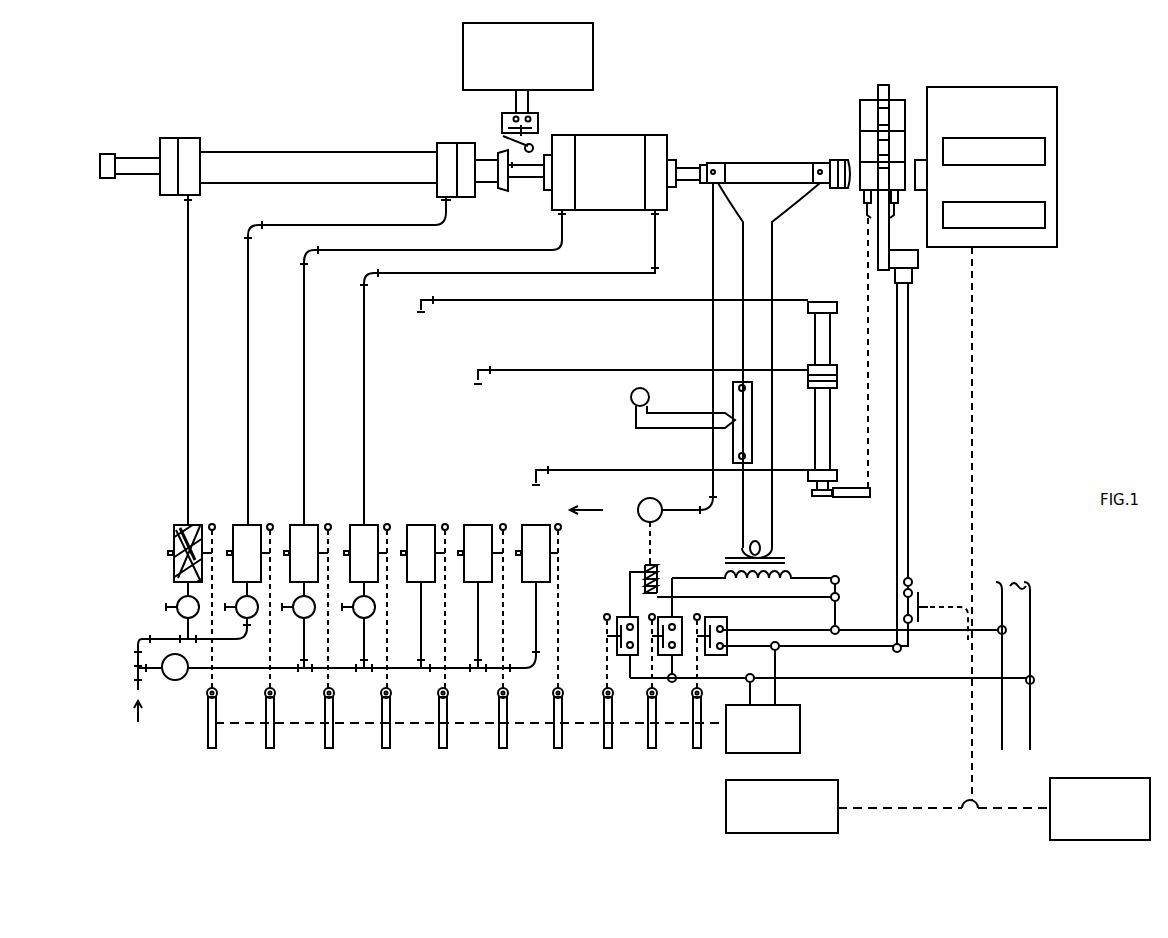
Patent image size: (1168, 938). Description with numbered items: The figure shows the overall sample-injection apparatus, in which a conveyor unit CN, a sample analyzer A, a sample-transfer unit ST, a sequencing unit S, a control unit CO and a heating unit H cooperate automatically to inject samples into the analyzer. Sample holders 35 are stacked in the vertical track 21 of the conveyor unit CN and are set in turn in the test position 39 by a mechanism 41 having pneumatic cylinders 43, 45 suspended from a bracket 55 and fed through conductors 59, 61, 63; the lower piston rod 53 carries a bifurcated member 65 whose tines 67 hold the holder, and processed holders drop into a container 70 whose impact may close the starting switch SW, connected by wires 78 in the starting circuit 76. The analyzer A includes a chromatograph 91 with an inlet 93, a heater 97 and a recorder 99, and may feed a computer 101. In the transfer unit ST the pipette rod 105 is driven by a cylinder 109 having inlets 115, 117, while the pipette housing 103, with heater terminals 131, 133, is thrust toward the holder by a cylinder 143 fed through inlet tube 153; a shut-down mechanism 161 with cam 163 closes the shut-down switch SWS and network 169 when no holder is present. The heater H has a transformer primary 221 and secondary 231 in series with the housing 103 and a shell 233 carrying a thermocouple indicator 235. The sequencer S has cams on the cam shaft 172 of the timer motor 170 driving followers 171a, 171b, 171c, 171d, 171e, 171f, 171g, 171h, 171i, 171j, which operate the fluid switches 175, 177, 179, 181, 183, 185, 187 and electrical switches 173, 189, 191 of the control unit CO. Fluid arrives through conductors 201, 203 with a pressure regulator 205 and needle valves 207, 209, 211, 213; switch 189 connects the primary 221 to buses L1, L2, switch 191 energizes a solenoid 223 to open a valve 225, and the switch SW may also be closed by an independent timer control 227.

The piston rod 105 is at (146, 155).
The cylinder 109 is at (344, 156).
The fluid inlet 115 is at (192, 198).
The fluid inlet 117 is at (446, 198).
The shut-down mechanism 161 is at (467, 160).
The cam 163 is at (503, 190).
The shut-down network 169 is at (593, 60).
The shut-down switch SWS is at (538, 125).
The cylinder 143 is at (625, 172).
The sample-transfer unit ST is at (522, 223).
The inlet tube 153 is at (564, 212).
The bracket 55 is at (656, 212).
The terminal 131 is at (713, 163).
The pipette holder or housing 103 is at (769, 163).
The terminal 133 is at (820, 163).
The sample holder 35 is at (868, 100).
The vertical track 21 is at (882, 164).
The conveyor unit CN is at (843, 111).
The test position 39 is at (860, 180).
The inlet 93 is at (918, 163).
The container 70 is at (912, 260).
The wires 78 is at (908, 352).
The chromatograph 91 is at (1052, 120).
The sample analyzer A is at (987, 73).
The heater 97 is at (990, 166).
The recorder 99 is at (1005, 203).
The conductor 63 is at (790, 303).
The pneumatic cylinder 43 is at (825, 340).
The conductor 59 is at (810, 390).
The mechanism 41 is at (851, 390).
The pneumatic cylinder 45 is at (828, 434).
The conductor 61 is at (784, 470).
The piston rod 53 is at (812, 492).
The tines 67 is at (845, 492).
The bifurcated member 65 is at (853, 516).
The thermocouple temperature indicator 235 is at (631, 400).
The shell 233 is at (735, 438).
The secondary 231 is at (748, 552).
The heating unit H is at (758, 549).
The primary 221 is at (792, 578).
The control unit CO is at (455, 570).
The fluid switch 175 is at (176, 526).
The adjustable needle valve 207 is at (178, 600).
The fluid switch 177 is at (238, 526).
The adjustable needle valve 209 is at (256, 630).
The fluid switch 179 is at (296, 526).
The adjustable needle valve 211 is at (302, 620).
The fluid switch 181 is at (358, 526).
The adjustable needle valve 213 is at (362, 620).
The fluid switch 187 is at (416, 526).
The fluid switch 183 is at (474, 526).
The fluid switch 185 is at (532, 526).
The conductor 203 is at (140, 639).
The pressure regulator 205 is at (163, 676).
The conductor 201 is at (258, 672).
The sequencing unit S is at (157, 720).
The cam shaft 172 is at (476, 730).
The follower 171a is at (693, 692).
The follower 171b is at (208, 692).
The follower 171c is at (266, 692).
The follower 171d is at (325, 692).
The follower 171e is at (382, 692).
The follower 171f is at (499, 692).
The follower 171g is at (554, 692).
The follower 171h is at (439, 692).
The follower 171i is at (648, 692).
The follower 171j is at (604, 692).
The valve 225 is at (650, 502).
The solenoid 223 is at (719, 582).
The electrical switch 191 is at (618, 617).
The electrical switch 189 is at (663, 617).
The electrical switch 173 is at (724, 617).
The starting circuit 76 is at (832, 640).
The starting switch SW is at (943, 611).
The bus L1 is at (993, 656).
The bus L2 is at (1031, 656).
The timer motor 170 is at (800, 726).
The computer 101 is at (840, 790).
The timer control 227 is at (1050, 792).